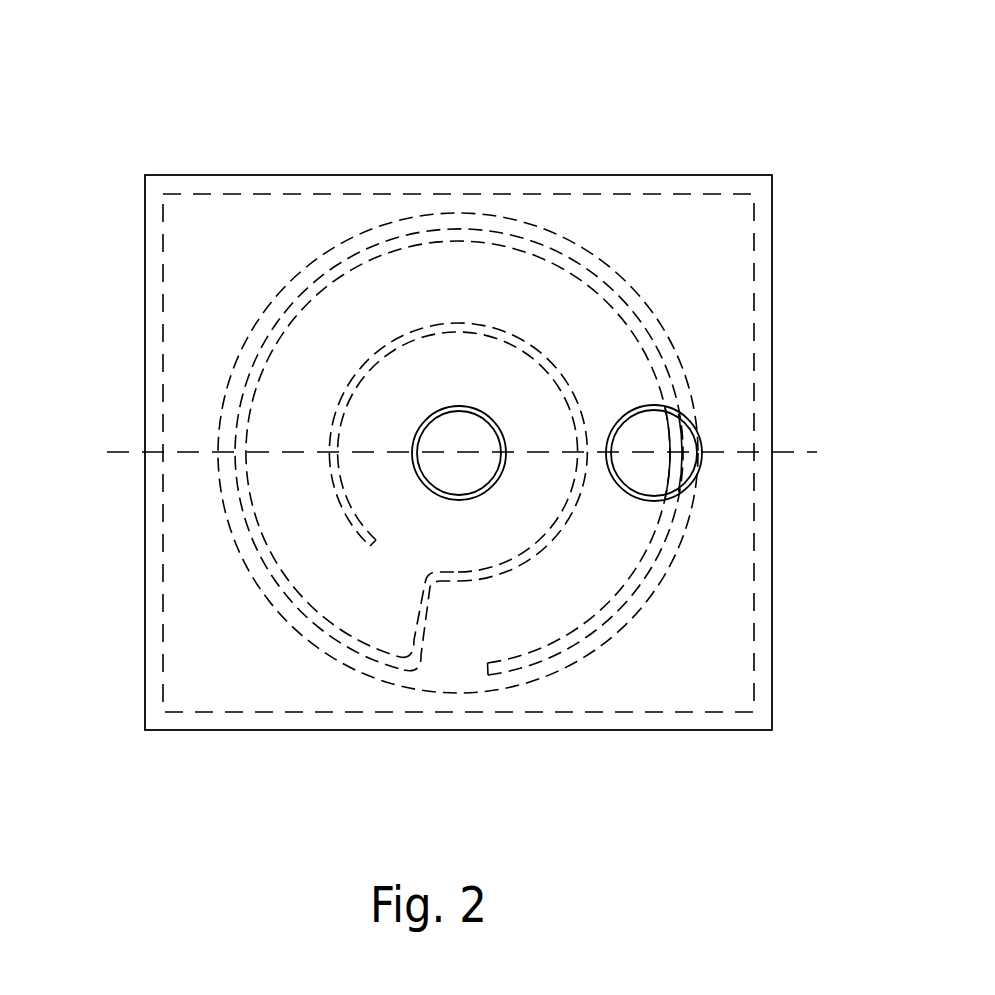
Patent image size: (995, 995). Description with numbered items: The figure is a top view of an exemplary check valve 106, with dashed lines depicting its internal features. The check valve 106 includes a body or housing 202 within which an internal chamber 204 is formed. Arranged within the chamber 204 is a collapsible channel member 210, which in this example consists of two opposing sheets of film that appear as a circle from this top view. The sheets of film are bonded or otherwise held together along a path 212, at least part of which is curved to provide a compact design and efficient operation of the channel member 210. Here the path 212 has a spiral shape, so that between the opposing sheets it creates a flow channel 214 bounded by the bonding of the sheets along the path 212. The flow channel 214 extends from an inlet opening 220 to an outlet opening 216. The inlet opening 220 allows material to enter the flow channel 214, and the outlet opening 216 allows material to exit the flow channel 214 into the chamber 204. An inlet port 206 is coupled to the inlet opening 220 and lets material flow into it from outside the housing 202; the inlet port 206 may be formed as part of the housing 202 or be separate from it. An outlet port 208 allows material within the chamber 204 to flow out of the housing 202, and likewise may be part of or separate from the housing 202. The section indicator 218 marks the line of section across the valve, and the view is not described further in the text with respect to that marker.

The check valve 106 is at (237, 63).
The housing 202 is at (662, 175).
The internal chamber 204 is at (717, 250).
The inlet port 206 is at (442, 408).
The outlet port 208 is at (688, 487).
The collapsible channel member 210 is at (292, 277).
The path 212 is at (348, 397).
The flow channel 214 is at (442, 540).
The outlet opening 216 is at (453, 662).
The section line 218 is at (93, 452).
The inlet opening 220 is at (458, 443).